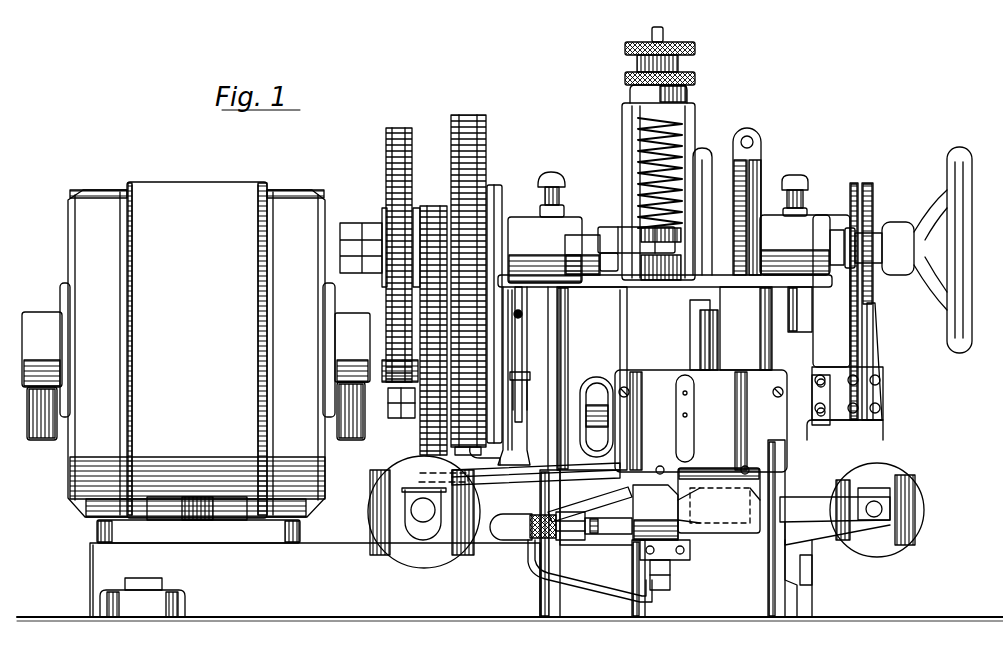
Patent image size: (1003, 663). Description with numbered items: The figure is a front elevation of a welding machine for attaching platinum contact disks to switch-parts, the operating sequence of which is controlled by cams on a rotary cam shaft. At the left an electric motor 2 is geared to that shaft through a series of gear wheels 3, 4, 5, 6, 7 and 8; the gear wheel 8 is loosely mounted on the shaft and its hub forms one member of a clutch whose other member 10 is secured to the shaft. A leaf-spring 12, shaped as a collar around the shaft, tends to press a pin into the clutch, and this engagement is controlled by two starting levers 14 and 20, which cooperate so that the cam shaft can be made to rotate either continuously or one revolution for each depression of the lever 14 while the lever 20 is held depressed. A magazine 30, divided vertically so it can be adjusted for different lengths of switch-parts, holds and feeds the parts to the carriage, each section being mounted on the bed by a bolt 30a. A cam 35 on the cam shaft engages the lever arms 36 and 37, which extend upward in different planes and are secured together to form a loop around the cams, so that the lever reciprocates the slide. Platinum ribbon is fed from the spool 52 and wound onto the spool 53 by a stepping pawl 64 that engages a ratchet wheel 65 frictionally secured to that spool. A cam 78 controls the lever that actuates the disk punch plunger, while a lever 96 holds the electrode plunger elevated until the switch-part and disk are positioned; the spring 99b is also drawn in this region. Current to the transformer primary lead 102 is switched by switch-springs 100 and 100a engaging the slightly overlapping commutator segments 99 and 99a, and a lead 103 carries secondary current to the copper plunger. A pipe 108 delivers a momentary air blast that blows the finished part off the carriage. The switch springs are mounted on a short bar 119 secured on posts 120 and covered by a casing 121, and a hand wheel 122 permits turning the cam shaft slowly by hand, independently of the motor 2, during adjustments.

The electric motor 2 is at (196, 362).
The gear wheel 3 is at (393, 403).
The gear wheel 4 is at (402, 130).
The gear wheel 5 is at (428, 206).
The gear wheel 6 is at (415, 420).
The gear wheel 7 is at (485, 459).
The gear wheel 8 is at (478, 162).
The clutch member 10 is at (497, 187).
The leaf-spring 12 is at (510, 242).
The starting lever 14 is at (524, 316).
The starting lever 20 is at (531, 378).
The magazine 30 is at (723, 383).
The bolt 30a is at (823, 482).
The cam 35 is at (764, 241).
The lever arm 36 is at (747, 168).
The lever arm 37 is at (762, 180).
The spool 52 is at (925, 495).
The spool 53 is at (432, 556).
The stepping pawl 64 is at (503, 478).
The ratchet wheel 65 is at (412, 528).
The cam 78 is at (707, 228).
The lever 96 is at (607, 240).
The commutator segment 99 is at (870, 284).
The commutator segment 99a is at (853, 283).
The spring 99b is at (662, 148).
The switch-spring 100 is at (876, 316).
The switch-spring 100a is at (853, 340).
The primary lead 102 is at (512, 542).
The lead 103 is at (596, 384).
The pipe 108 is at (582, 575).
The bar 119 is at (747, 467).
The post 120 is at (790, 510).
The casing 121 is at (722, 524).
The hand wheel 122 is at (966, 286).